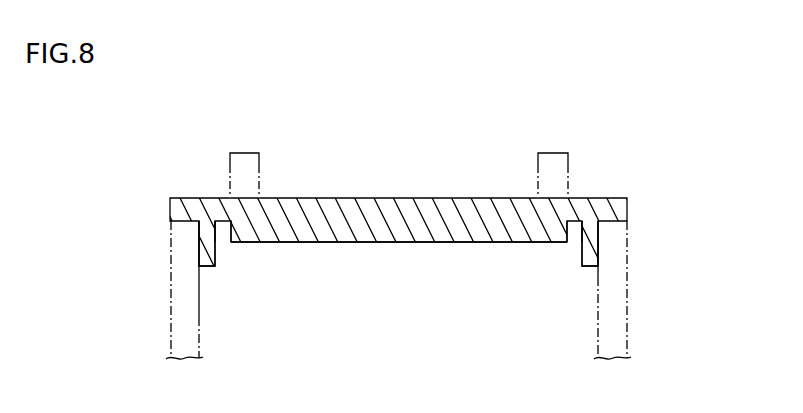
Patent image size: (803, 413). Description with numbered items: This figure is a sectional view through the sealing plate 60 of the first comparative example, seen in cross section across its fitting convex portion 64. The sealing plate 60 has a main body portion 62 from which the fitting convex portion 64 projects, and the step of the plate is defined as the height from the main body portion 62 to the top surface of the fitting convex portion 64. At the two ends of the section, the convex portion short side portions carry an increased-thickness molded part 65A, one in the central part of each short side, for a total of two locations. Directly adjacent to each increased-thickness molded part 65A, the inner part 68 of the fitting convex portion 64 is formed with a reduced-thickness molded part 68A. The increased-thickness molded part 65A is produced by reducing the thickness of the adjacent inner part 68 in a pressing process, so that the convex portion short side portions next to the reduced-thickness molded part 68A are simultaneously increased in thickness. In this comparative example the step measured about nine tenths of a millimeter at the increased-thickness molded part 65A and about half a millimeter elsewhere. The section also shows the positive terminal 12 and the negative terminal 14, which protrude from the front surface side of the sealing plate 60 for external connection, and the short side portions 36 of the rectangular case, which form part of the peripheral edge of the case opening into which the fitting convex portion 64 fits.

The positive terminal 12 is at (246, 152).
The negative terminal 14 is at (555, 152).
The short side portion 36 is at (171, 316).
The sealing plate 60 is at (381, 236).
The main body portion 62 is at (398, 189).
The fitting convex portion 64 is at (407, 244).
The inner part 68 is at (381, 278).
The reduced-thickness molded part 68A is at (221, 222).
The increased-thickness molded part 65A is at (206, 267).